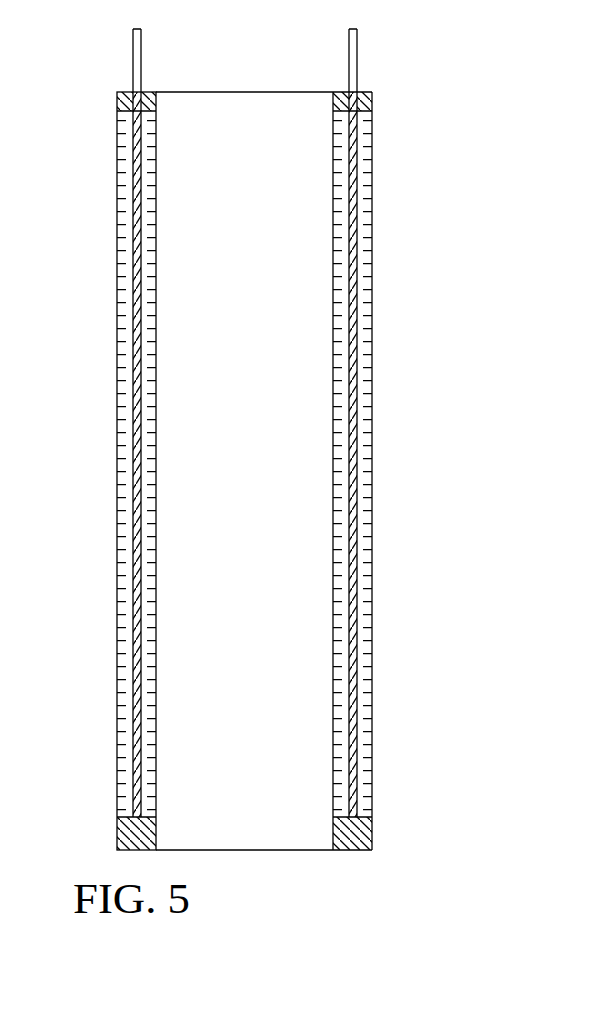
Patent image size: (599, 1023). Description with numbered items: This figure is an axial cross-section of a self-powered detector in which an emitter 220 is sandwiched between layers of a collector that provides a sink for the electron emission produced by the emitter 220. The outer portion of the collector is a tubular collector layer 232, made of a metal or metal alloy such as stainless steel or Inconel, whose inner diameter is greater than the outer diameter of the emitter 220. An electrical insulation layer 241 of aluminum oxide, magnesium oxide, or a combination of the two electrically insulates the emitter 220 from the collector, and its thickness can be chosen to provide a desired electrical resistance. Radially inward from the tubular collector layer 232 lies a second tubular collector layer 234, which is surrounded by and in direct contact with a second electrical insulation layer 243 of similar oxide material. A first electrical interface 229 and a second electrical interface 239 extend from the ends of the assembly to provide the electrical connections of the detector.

The emitter 220 is at (138, 378).
The first electrical interface 229 is at (132, 45).
The second electrical interface 239 is at (358, 47).
The second tubular collector layer 234 is at (333, 244).
The tubular collector layer 232 is at (373, 243).
The electrical insulation layer 241 is at (367, 463).
The second electrical insulation layer 243 is at (343, 507).